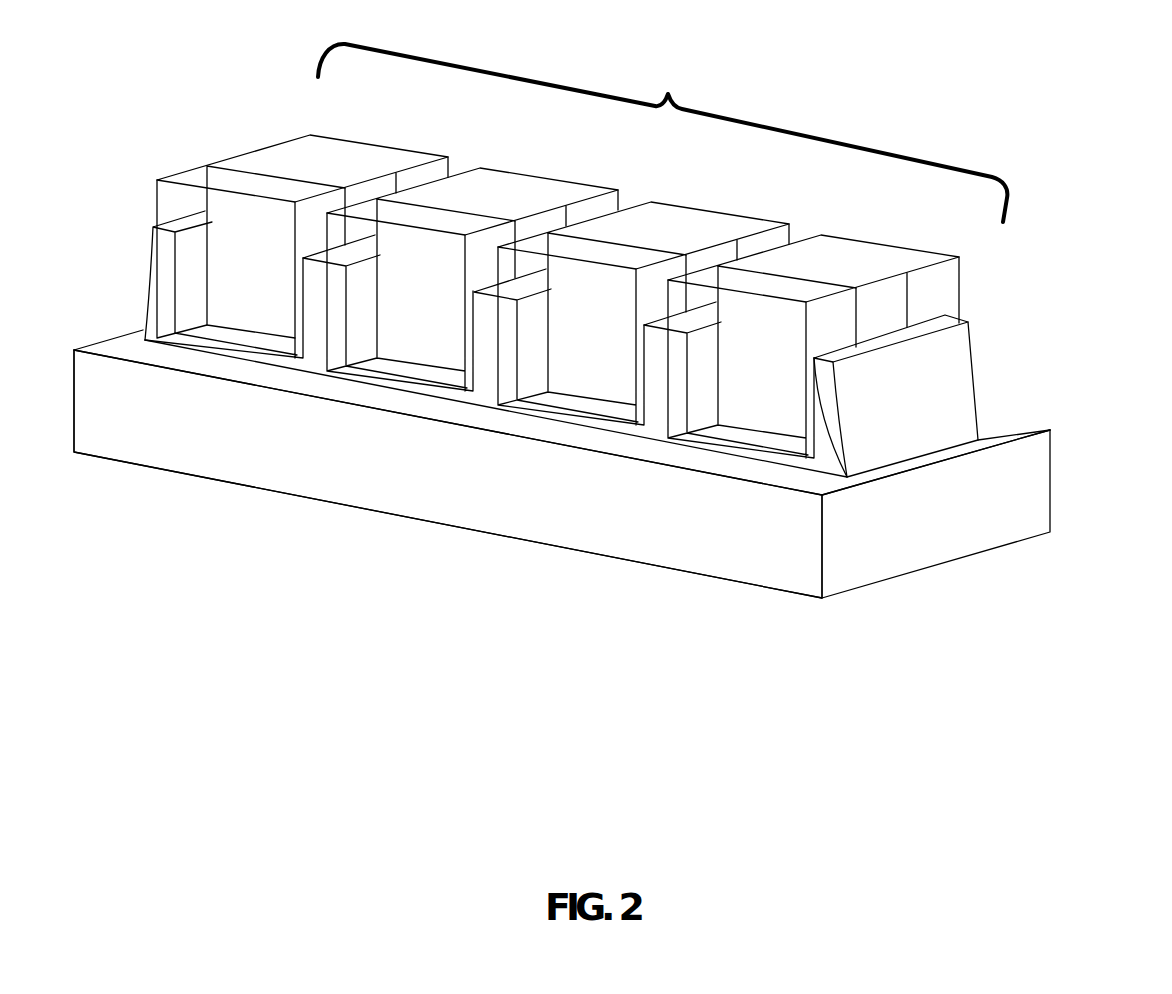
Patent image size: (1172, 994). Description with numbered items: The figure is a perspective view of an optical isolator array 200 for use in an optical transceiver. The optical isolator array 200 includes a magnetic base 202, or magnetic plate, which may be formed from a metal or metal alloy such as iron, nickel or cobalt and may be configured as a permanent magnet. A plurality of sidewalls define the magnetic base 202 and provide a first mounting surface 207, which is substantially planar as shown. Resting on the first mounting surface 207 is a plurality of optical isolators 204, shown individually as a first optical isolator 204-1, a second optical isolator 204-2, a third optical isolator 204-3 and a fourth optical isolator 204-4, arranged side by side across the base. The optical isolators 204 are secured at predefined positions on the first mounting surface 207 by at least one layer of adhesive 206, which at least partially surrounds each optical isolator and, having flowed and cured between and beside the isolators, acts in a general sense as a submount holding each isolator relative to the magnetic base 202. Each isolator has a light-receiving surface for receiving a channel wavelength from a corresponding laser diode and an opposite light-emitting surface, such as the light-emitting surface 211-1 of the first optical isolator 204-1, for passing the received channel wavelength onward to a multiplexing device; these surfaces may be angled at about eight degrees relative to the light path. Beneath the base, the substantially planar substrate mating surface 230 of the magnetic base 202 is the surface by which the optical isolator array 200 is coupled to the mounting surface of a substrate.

The optical isolator array 200 is at (177, 112).
The magnetic base 202 is at (1052, 472).
The plurality of optical isolators 204 is at (676, 92).
The optical isolator 204-1 is at (319, 140).
The optical isolator 204-2 is at (491, 168).
The optical isolator 204-3 is at (700, 182).
The optical isolator 204-4 is at (854, 242).
The layer of adhesive 206 is at (963, 347).
The first mounting surface 207 is at (1018, 418).
The light-emitting surface 211-1 is at (210, 271).
The substrate mating surface 230 is at (382, 524).